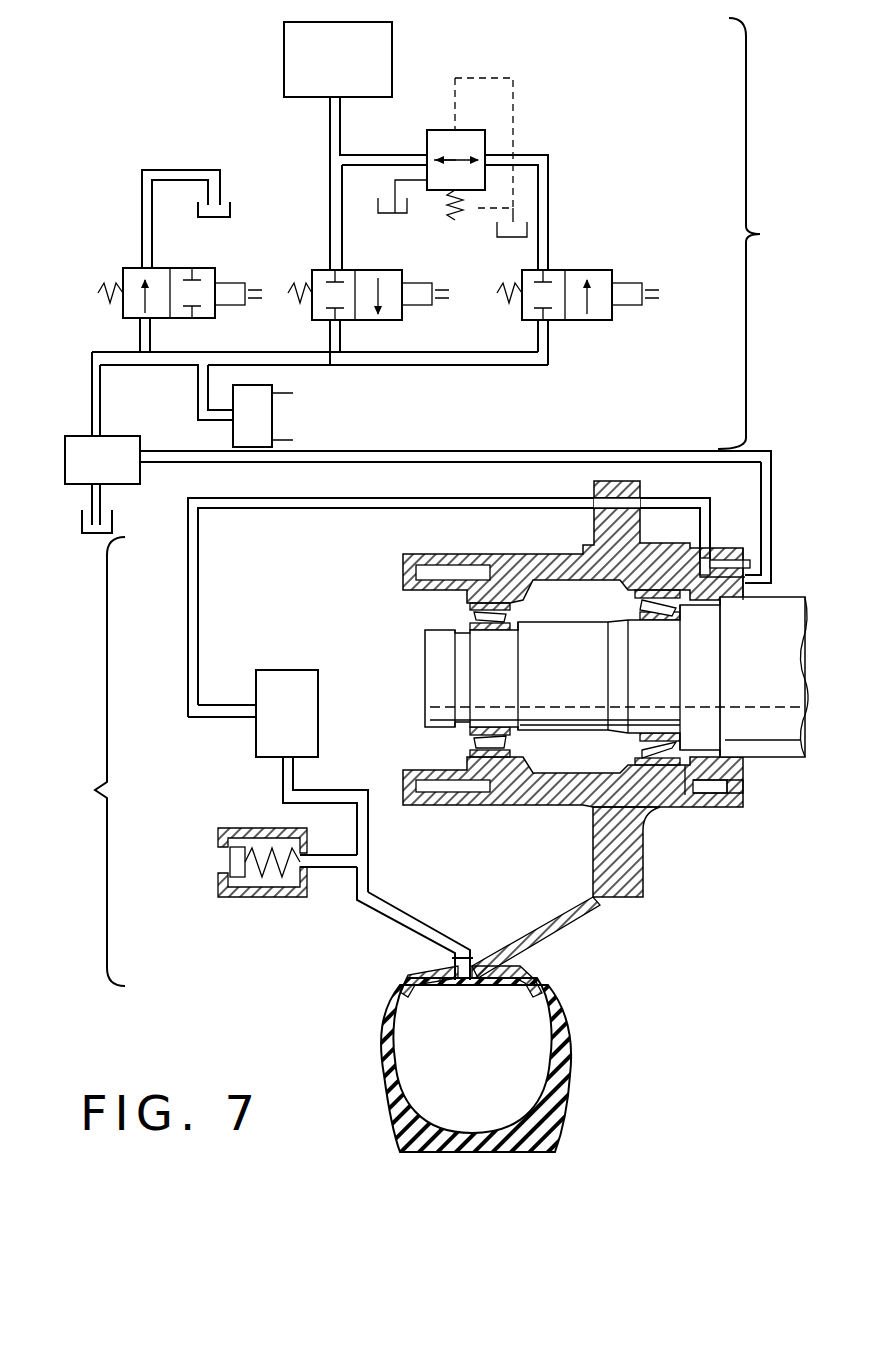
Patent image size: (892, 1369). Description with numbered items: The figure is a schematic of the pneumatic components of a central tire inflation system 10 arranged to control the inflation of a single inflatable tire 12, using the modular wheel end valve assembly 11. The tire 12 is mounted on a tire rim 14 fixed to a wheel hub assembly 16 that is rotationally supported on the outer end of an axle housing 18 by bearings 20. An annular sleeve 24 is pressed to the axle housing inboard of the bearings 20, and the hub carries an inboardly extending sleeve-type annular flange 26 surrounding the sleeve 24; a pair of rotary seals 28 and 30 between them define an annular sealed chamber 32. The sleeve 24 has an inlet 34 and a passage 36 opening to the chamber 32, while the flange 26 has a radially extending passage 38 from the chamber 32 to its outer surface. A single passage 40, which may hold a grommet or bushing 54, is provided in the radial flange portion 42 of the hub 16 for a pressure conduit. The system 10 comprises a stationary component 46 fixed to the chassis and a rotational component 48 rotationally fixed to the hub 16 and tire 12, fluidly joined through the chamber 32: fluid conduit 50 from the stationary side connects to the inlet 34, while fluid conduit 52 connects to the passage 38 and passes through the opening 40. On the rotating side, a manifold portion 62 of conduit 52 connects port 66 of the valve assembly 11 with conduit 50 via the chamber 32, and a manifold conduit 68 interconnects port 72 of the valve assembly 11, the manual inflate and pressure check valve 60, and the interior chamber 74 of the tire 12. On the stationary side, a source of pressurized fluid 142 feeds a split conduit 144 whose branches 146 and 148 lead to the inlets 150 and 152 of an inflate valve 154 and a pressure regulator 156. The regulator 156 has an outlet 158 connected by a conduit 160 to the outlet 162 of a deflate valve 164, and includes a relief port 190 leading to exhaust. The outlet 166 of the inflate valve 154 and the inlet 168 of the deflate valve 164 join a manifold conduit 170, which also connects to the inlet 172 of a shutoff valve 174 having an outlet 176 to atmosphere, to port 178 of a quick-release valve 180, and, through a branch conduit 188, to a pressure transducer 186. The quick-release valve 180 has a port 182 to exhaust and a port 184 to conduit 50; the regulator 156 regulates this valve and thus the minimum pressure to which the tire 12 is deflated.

The central tire inflation system 10 is at (695, 432).
The modular wheel end valve assembly 11 is at (288, 668).
The inflatable tire 12 is at (566, 1040).
The tire rim 14 is at (405, 990).
The wheel hub assembly 16 is at (533, 790).
The axle housing 18 is at (762, 740).
The bearings 20 is at (660, 725).
The annular sleeve 24 is at (697, 755).
The sleeve-type annular flange 26 is at (740, 805).
The rotary seal 28 is at (686, 795).
The rotary seal 30 is at (745, 790).
The annular sealed chamber 32 is at (705, 793).
The inlet 34 is at (740, 592).
The passage 36 is at (740, 608).
The radially extending passage 38 is at (700, 558).
The passage 40 is at (600, 527).
The radial flange portion 42 is at (617, 867).
The stationary component 46 is at (762, 233).
The rotational component 48 is at (82, 761).
The fluid conduit 50 is at (535, 452).
The fluid conduit 52 is at (708, 500).
The grommet or bushing 54 is at (594, 490).
The manual inflate and pressure check valve 60 is at (214, 852).
The manifold portion 62 is at (186, 647).
The port 66 is at (258, 715).
The manifold conduit 68 is at (370, 815).
The port 72 is at (294, 770).
The interior chamber 74 is at (471, 1055).
The source of pressurized fluid 142 is at (284, 60).
The split conduit 144 is at (330, 125).
The branch 146 is at (330, 187).
The branch 148 is at (385, 157).
The inlet 150 is at (330, 265).
The inlet 152 is at (428, 158).
The inflate valve 154 is at (386, 264).
The pressure regulator 156 is at (555, 95).
The outlet 158 is at (488, 167).
The conduit 160 is at (548, 197).
The outlet 162 is at (548, 262).
The deflate valve 164 is at (586, 327).
The outlet 166 is at (330, 335).
The inlet 168 is at (538, 335).
The manifold conduit 170 is at (400, 366).
The inlet 172 is at (140, 333).
The shutoff valve 174 is at (171, 262).
The outlet 176 is at (140, 262).
The port 178 is at (92, 432).
The quick-release valve 180 is at (132, 504).
The port 182 is at (92, 495).
The port 184 is at (150, 463).
The pressure transducer 186 is at (285, 418).
The branch conduit 188 is at (198, 377).
The relief port 190 is at (424, 182).